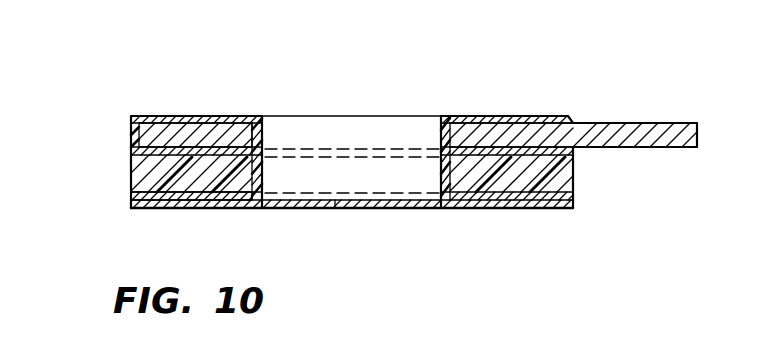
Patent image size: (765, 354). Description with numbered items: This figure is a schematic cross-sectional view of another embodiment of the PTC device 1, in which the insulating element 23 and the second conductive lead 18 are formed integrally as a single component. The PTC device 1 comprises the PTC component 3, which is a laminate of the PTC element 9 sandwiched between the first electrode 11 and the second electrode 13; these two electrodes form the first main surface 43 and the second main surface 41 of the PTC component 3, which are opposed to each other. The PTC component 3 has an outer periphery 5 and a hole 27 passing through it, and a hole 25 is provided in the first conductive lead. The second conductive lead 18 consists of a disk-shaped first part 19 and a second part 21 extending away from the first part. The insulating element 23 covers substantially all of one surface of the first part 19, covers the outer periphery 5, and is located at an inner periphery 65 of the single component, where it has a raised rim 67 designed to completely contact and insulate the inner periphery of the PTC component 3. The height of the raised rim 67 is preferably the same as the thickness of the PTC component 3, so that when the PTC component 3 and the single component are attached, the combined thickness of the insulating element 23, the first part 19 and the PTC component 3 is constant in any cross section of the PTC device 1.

The PTC device 1 is at (556, 44).
The PTC component 3 is at (543, 222).
The outer periphery 5 is at (131, 172).
The PTC element 9 is at (500, 200).
The first electrode 11 is at (484, 194).
The second electrode 13 is at (464, 180).
The second conductive lead 18 is at (667, 28).
The first part of second conductive lead 19 is at (558, 116).
The second part of second conductive lead 21 is at (607, 116).
The insulating element 23 is at (477, 116).
The hole in first conductive lead 25 is at (345, 208).
The hole in PTC component 27 is at (320, 145).
The second main surface 41 is at (160, 116).
The first main surface 43 is at (170, 201).
The inner periphery of unified component 65 is at (272, 116).
The raised rim of insulating element 67 is at (273, 208).